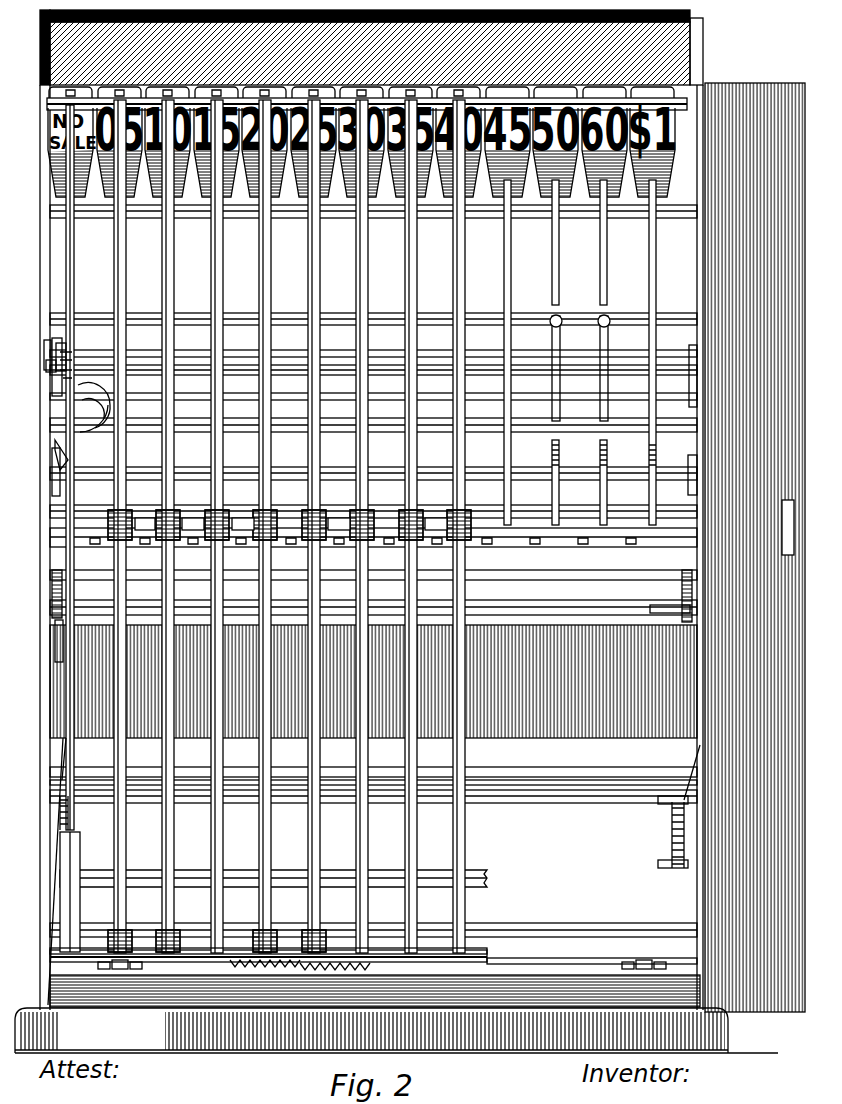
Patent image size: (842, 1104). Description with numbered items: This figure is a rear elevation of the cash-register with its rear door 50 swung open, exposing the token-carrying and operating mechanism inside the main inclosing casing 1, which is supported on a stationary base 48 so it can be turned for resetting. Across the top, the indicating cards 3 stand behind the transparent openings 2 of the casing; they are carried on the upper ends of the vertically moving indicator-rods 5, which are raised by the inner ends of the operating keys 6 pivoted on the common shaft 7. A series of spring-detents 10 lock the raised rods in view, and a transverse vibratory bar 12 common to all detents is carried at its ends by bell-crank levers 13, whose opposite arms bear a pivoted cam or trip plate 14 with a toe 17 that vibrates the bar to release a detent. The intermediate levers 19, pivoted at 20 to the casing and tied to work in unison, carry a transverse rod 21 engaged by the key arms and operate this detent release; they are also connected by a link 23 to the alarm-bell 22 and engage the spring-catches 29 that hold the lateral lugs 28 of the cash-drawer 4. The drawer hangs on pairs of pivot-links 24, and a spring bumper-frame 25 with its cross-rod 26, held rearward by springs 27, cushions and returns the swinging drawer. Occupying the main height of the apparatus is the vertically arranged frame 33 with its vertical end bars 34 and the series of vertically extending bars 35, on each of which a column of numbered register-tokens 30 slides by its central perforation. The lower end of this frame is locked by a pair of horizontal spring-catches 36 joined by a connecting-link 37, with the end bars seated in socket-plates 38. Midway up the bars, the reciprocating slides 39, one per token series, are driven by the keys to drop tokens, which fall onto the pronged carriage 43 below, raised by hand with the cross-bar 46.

The main inclosing casing 1 is at (40, 250).
The transparent openings 2 is at (440, 78).
The indicating cards 3 is at (220, 88).
The cash-drawer 4 is at (373, 681).
The indicator-rods 5 is at (552, 252).
The operating keys 6 is at (594, 506).
The common shaft 7 is at (335, 466).
The spring-detents 10 is at (598, 340).
The vibratory bar 12 is at (256, 400).
The bell-crank levers 13 is at (52, 378).
The cam or trip plate 14 is at (55, 342).
The toe 17 is at (70, 360).
The intermediate levers 19 is at (52, 494).
The pivot 20 is at (244, 606).
The transverse rod 21 is at (190, 516).
The alarm-bell 22 is at (86, 408).
The link 23 is at (56, 455).
The pivot-links 24 is at (60, 750).
The spring bumper-frame 25 is at (50, 800).
The cross-rod 26 is at (194, 803).
The springs 27 is at (60, 828).
The lateral lugs 28 is at (55, 637).
The spring-catches 29 is at (52, 596).
The register-tokens 30 is at (136, 510).
The vertically-arranged frame 33 is at (318, 84).
The vertical end bars 34 is at (74, 264).
The vertically-extending bars 35 is at (126, 275).
The spring-catches 36 is at (120, 970).
The connecting-link 37 is at (530, 962).
The socket-plates 38 is at (102, 970).
The reciprocating slides 39 is at (185, 538).
The vertically-moving carriage 43 is at (66, 905).
The cross-bar 46 is at (194, 887).
The stationary base 48 is at (396, 1030).
The door 50 is at (755, 547).